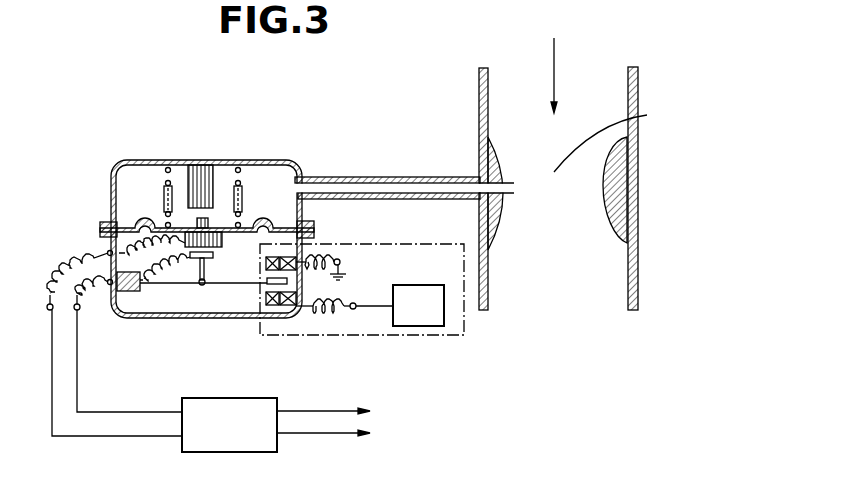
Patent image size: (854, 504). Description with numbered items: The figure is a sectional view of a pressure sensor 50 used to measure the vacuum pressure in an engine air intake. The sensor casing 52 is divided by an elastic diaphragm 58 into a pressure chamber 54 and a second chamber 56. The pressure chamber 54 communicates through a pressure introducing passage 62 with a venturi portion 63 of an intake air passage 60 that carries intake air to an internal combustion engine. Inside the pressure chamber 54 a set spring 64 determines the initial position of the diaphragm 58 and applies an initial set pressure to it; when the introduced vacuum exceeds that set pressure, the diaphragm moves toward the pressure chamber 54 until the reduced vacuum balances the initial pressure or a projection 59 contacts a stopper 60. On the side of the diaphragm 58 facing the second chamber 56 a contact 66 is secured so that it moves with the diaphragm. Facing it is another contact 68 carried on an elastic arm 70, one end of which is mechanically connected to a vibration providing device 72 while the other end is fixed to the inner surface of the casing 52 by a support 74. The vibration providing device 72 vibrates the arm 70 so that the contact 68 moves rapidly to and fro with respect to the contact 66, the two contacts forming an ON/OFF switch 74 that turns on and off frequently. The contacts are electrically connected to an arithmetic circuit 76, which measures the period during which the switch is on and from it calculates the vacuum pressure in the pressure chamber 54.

The pressure sensor 50 is at (300, 156).
The sensor casing 52 is at (111, 182).
The pressure chamber 54 is at (257, 180).
The second chamber 56 is at (209, 305).
The diaphragm 58 is at (140, 227).
The projection 59 is at (197, 222).
The stopper / intake air passage 60 is at (206, 170).
The pressure introducing passage 62 is at (410, 177).
The venturi portion 63 is at (614, 135).
The set spring 64 is at (165, 182).
The contact 66 is at (216, 247).
The contact 68 is at (197, 264).
The elastic arm 70 is at (249, 286).
The vibration providing device 72 is at (390, 243).
The support / ON/OFF switch 74 is at (130, 292).
The arithmetic circuit 76 is at (250, 405).